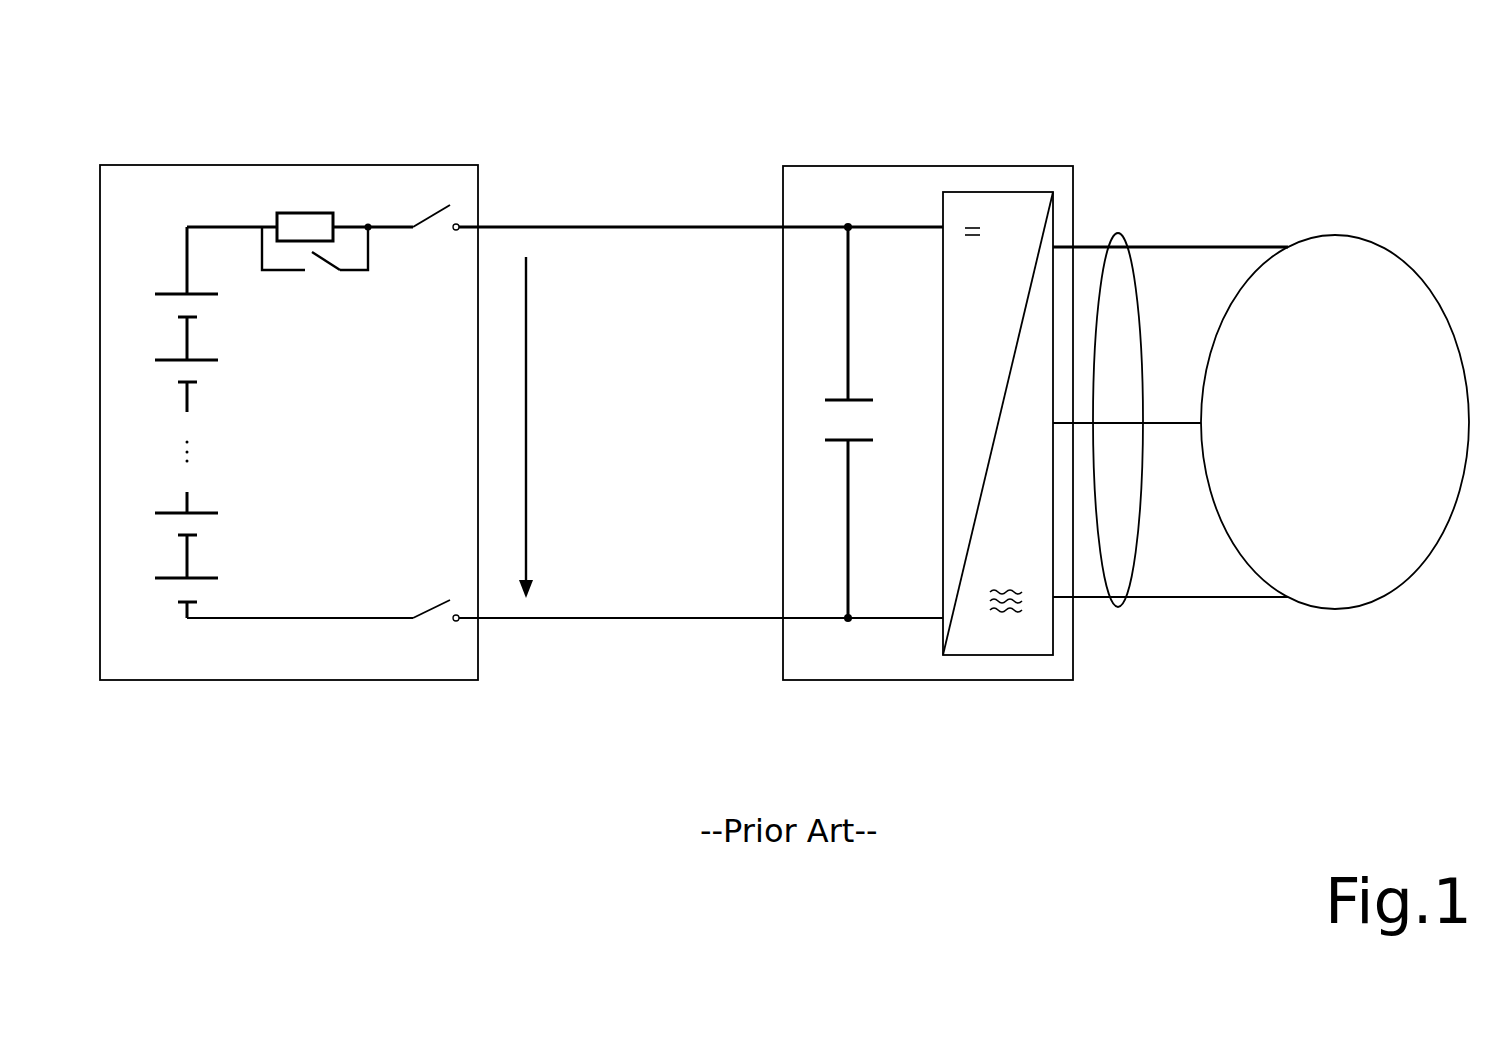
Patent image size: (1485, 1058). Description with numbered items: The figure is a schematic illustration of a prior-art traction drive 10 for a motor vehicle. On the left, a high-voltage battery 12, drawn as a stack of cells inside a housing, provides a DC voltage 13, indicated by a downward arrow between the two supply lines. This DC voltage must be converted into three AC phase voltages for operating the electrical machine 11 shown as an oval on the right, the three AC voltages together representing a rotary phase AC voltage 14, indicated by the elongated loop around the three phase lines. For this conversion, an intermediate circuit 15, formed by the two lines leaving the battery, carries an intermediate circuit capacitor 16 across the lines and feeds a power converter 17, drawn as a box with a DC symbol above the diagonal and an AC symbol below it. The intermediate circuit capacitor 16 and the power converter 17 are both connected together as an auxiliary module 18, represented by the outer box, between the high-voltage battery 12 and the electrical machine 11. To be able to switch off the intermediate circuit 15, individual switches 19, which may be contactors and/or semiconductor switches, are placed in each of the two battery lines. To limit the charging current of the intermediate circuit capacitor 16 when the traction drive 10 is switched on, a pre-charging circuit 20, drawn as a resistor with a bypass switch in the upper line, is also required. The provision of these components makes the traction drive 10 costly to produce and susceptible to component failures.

The traction drive 10 is at (878, 100).
The electrical machine 11 is at (1338, 235).
The high-voltage battery 12 is at (412, 163).
The DC voltage 13 is at (526, 412).
The rotary phase AC voltage 14 is at (1118, 235).
The intermediate circuit 15 is at (657, 226).
The intermediate circuit capacitor 16 is at (830, 400).
The power converter 17 is at (1000, 192).
The auxiliary module 18 is at (1000, 680).
The switches 19 is at (432, 243).
The pre-charging circuit 20 is at (312, 176).